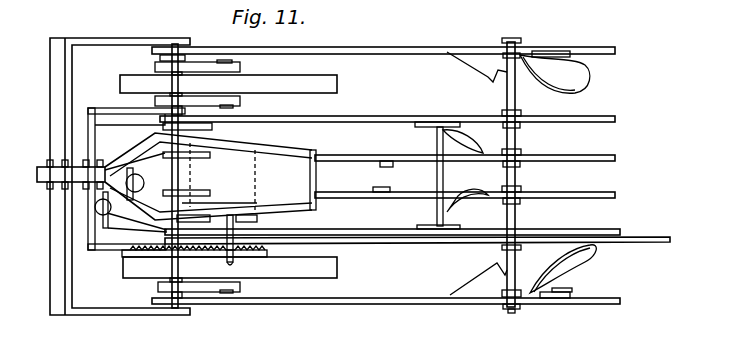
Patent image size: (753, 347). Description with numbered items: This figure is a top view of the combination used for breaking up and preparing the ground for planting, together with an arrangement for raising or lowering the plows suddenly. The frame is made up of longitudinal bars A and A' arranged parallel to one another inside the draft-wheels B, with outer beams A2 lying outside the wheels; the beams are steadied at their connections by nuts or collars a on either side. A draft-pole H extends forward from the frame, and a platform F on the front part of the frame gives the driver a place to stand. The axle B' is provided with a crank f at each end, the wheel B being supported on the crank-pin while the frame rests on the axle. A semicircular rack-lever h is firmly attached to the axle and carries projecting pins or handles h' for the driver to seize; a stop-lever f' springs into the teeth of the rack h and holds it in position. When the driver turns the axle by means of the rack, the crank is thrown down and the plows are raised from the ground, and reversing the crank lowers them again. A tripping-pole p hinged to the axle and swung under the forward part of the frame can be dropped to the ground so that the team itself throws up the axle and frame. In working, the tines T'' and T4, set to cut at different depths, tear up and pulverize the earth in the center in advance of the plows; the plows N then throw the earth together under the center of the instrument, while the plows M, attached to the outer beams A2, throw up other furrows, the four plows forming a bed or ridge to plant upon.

The longitudinal frame bar A is at (383, 123).
The longitudinal frame bar A' is at (390, 167).
The outer frame beam A2 is at (386, 306).
The nut or collar a is at (417, 248).
The draft-wheel B is at (228, 176).
The axle B' is at (182, 176).
The platform F is at (78, 132).
The draft-pole H is at (58, 174).
The semicircular rack-lever h is at (199, 236).
The projecting pin or handle h' is at (131, 200).
The crank f is at (205, 176).
The stop-lever f' is at (217, 240).
The opening-plow M is at (523, 175).
The covering-plow N is at (414, 174).
The tripping-pole p is at (101, 110).
The tine T'' is at (210, 176).
The tine T4 is at (263, 181).